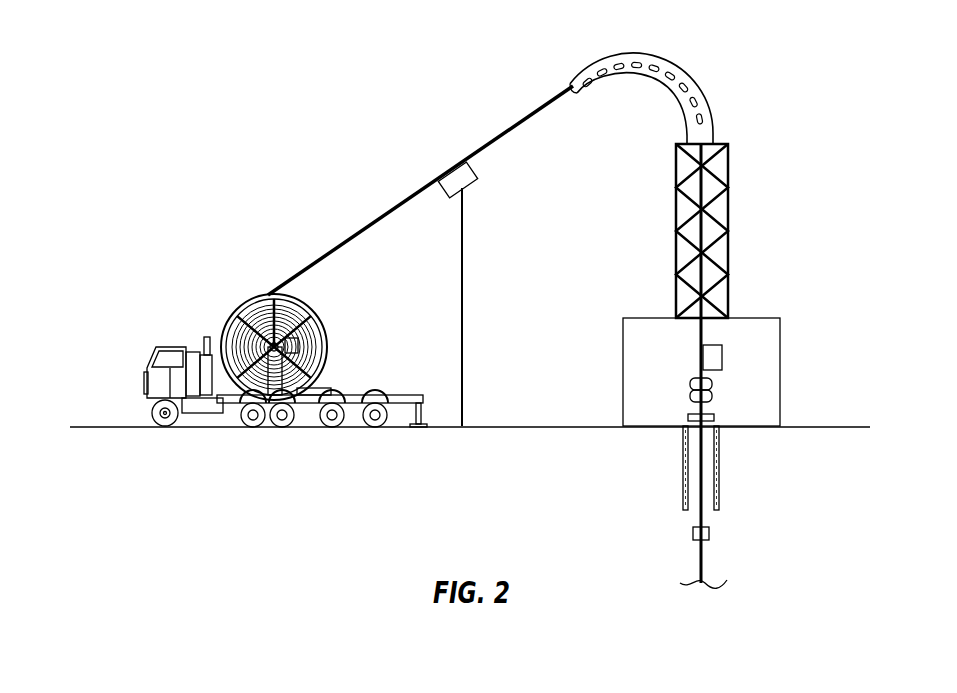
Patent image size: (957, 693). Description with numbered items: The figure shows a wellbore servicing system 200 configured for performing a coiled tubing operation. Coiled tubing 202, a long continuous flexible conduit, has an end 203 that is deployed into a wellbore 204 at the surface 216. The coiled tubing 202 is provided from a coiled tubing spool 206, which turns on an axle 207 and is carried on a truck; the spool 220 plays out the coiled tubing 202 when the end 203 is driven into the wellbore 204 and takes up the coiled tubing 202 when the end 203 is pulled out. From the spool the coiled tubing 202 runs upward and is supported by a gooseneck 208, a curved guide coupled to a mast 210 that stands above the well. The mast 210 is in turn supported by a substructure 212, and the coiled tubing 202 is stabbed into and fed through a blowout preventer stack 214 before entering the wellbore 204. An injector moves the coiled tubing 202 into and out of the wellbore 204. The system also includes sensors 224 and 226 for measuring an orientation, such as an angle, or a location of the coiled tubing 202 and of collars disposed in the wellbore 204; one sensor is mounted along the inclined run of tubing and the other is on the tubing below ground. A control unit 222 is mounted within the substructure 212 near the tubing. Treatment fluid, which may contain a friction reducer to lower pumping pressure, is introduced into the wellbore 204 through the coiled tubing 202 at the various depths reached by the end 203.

The wellbore servicing system 200 is at (136, 72).
The coiled tubing 202 is at (498, 137).
The end 203 is at (700, 580).
The wellbore 204 is at (683, 470).
The coiled tubing spool 206 is at (258, 297).
The axle 207 is at (232, 323).
The gooseneck 208 is at (632, 54).
The mast 210 is at (718, 142).
The substructure 212 is at (749, 318).
The blowout preventer (BOP) stack 214 is at (689, 397).
The surface 216 is at (132, 427).
The coiled tubing spool 220 is at (300, 340).
The control unit 222 is at (722, 358).
The sensor 224 is at (693, 532).
The sensor 226 is at (470, 184).